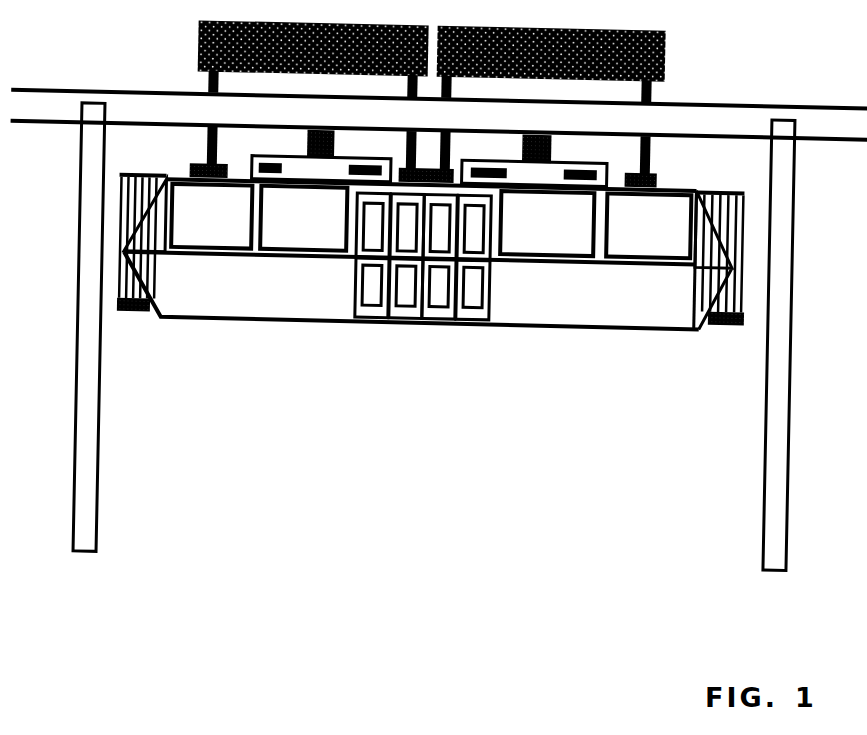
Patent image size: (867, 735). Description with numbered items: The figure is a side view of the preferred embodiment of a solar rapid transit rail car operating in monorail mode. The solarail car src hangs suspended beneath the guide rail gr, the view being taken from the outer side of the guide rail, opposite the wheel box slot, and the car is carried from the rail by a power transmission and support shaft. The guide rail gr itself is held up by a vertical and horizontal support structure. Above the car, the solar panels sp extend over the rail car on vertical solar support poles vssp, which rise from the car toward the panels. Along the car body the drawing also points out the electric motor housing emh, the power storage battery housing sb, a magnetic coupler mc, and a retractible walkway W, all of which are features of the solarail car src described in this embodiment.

The guide rail gr is at (52, 104).
The vertical solar support poles vssp is at (656, 78).
The solar panels sp is at (672, 22).
The power storage battery housing sb is at (190, 160).
The electric motor housing emh is at (280, 151).
The retractible walkway W is at (737, 210).
The magnetic coupler mc is at (723, 315).
The solarail car src is at (326, 290).